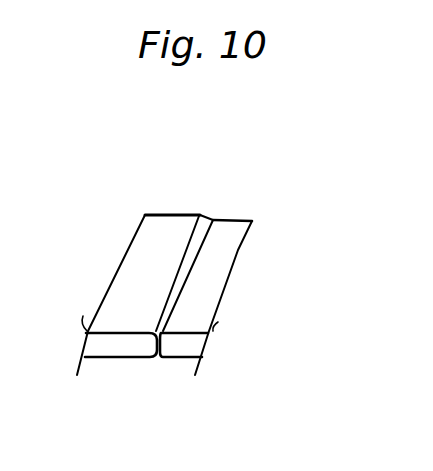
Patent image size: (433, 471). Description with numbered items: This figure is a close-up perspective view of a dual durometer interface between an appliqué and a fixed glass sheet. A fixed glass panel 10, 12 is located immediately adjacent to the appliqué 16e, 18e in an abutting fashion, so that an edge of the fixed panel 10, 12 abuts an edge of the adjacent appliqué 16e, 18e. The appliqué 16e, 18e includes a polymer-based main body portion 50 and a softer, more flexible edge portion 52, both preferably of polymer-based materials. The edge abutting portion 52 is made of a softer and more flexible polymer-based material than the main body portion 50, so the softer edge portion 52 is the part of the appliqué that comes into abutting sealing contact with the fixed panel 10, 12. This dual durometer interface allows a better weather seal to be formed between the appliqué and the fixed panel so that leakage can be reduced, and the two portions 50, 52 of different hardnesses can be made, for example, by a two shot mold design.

The fixed glass panel 10 is at (272, 297).
The fixed glass panel 12 is at (216, 268).
The appliqué 16e is at (125, 236).
The appliqué 18e is at (120, 232).
The main body portion 50 is at (133, 283).
The edge portion 52 is at (144, 320).